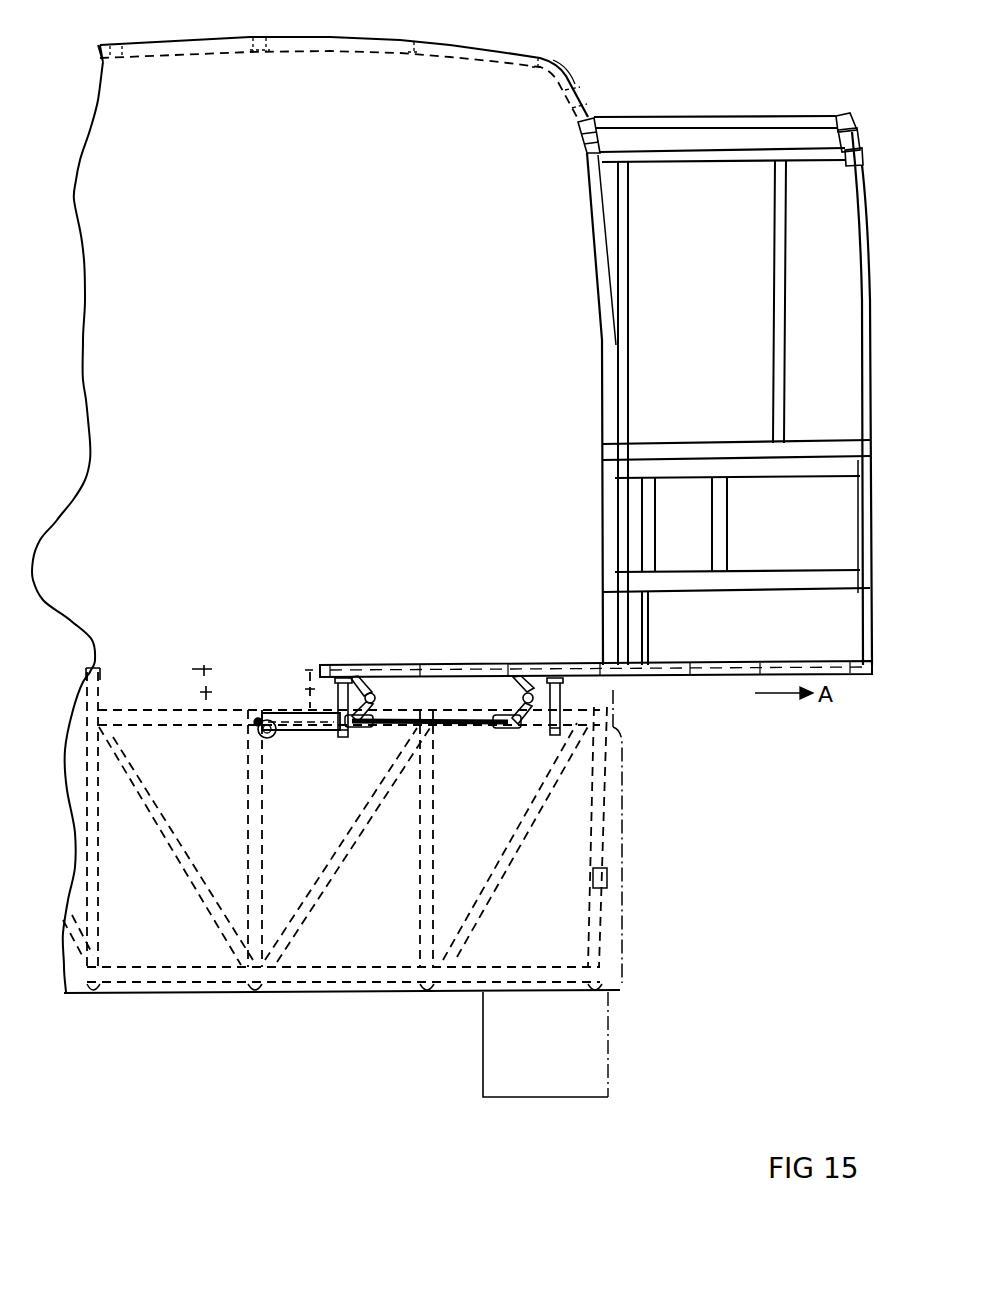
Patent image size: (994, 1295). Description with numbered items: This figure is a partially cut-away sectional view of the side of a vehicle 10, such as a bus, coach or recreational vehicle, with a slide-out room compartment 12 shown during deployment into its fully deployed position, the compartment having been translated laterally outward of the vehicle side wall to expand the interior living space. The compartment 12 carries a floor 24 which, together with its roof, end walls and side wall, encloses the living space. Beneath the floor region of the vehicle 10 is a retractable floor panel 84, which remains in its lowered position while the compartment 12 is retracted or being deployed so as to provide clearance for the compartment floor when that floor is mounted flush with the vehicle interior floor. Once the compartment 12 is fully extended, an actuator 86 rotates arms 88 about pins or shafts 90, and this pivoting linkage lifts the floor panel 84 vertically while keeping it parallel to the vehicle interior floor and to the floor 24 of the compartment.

The vehicle 10 is at (588, 74).
The slide-out room compartment 12 is at (794, 115).
The floor 24 is at (682, 663).
The retractable floor panel 84 is at (475, 663).
The actuator 86 is at (302, 740).
The arms 88 is at (376, 688).
The pins or shafts 90 is at (376, 697).